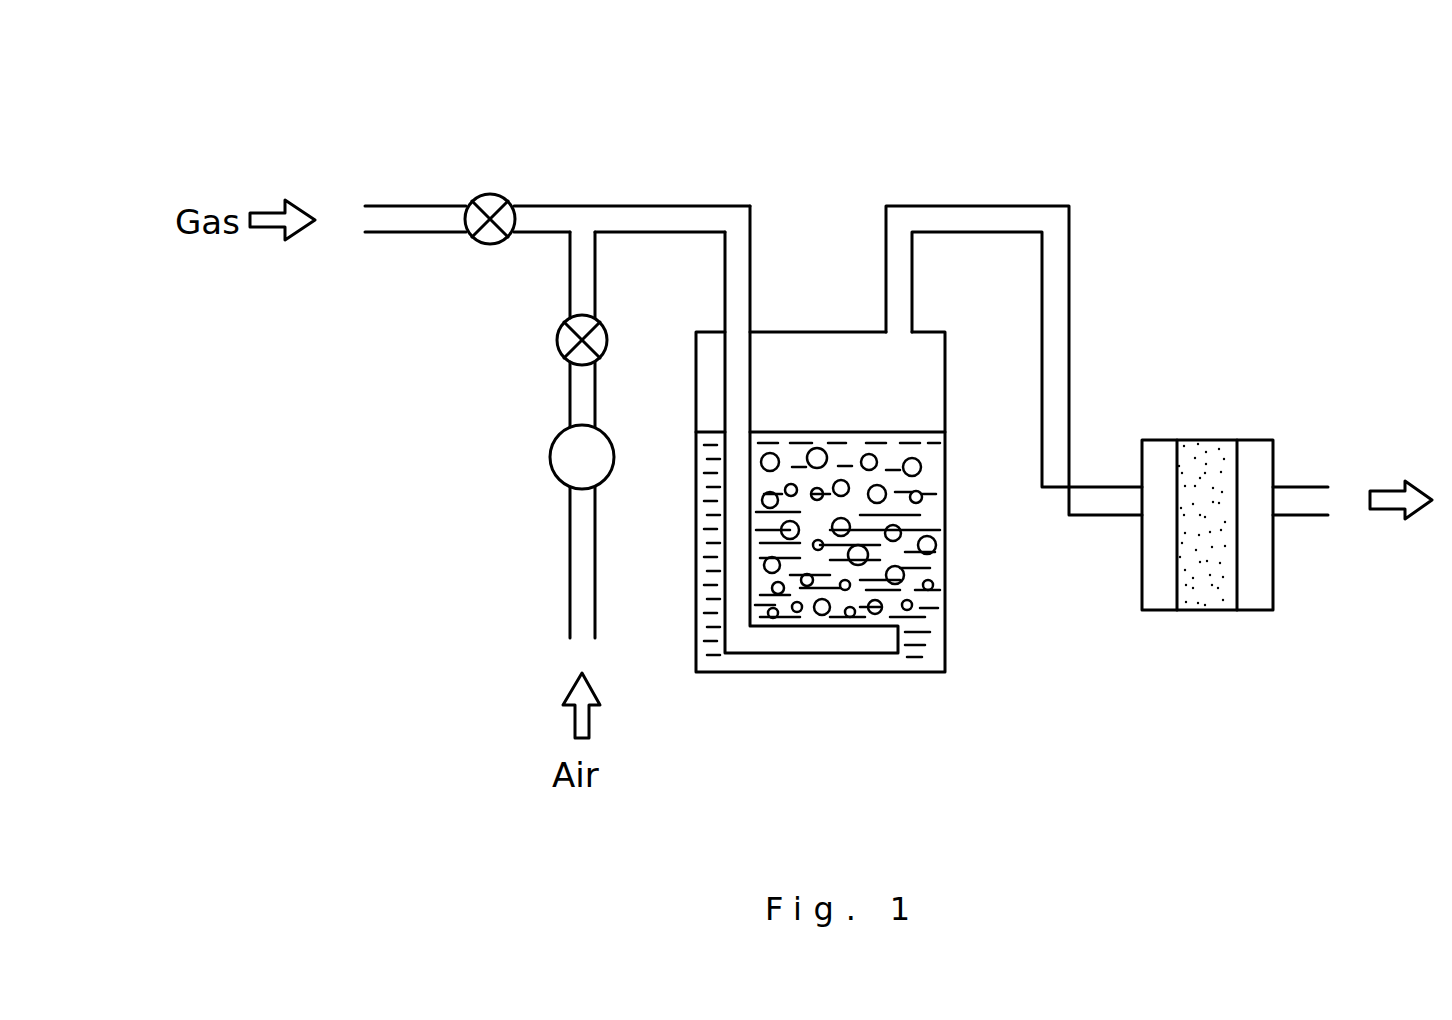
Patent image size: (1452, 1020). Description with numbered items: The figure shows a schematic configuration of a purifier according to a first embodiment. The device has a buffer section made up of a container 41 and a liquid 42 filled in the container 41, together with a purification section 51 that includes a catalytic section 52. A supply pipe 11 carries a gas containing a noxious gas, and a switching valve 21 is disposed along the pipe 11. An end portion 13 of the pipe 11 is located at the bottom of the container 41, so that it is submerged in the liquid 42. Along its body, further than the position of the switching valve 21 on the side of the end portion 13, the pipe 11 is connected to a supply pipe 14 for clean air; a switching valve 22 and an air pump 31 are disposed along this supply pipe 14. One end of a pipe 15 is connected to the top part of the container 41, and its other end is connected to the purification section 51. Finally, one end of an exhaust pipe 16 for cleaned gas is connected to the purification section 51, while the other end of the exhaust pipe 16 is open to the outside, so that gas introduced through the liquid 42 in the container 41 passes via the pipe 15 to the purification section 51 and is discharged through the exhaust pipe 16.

The supply pipe 11 is at (425, 206).
The switching valve 21 is at (505, 201).
The end portion 13 is at (808, 642).
The supply pipe 14 is at (596, 568).
The switching valve 22 is at (608, 351).
The air pump 31 is at (613, 472).
The container 41 is at (946, 378).
The liquid 42 is at (920, 595).
The pipe 15 is at (1005, 207).
The purification section 51 is at (1155, 440).
The catalytic section 52 is at (1200, 453).
The exhaust pipe 16 is at (1310, 487).